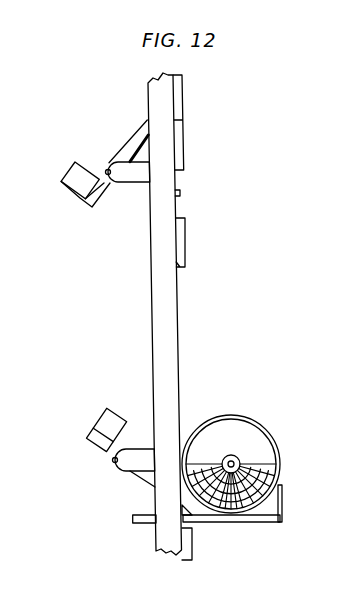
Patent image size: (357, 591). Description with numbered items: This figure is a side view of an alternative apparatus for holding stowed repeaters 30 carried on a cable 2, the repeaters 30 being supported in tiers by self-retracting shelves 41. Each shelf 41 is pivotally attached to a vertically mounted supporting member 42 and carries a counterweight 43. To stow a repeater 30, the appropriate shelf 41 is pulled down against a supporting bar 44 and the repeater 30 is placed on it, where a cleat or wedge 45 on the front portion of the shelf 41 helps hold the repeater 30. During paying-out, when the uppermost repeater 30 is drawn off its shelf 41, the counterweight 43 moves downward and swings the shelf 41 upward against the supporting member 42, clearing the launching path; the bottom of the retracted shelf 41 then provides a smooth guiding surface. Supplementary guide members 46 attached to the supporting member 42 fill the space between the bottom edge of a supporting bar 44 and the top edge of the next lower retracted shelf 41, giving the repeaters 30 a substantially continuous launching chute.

The cable 2 is at (237, 461).
The repeater 30 is at (243, 453).
The self-retracting shelf 41 is at (177, 112).
The vertically mounted supporting member 42 is at (155, 108).
The counterweight 43 is at (72, 177).
The supporting bar 44 is at (180, 193).
The cleat or wedge 45 is at (271, 507).
The supplementary guide member 46 is at (183, 263).